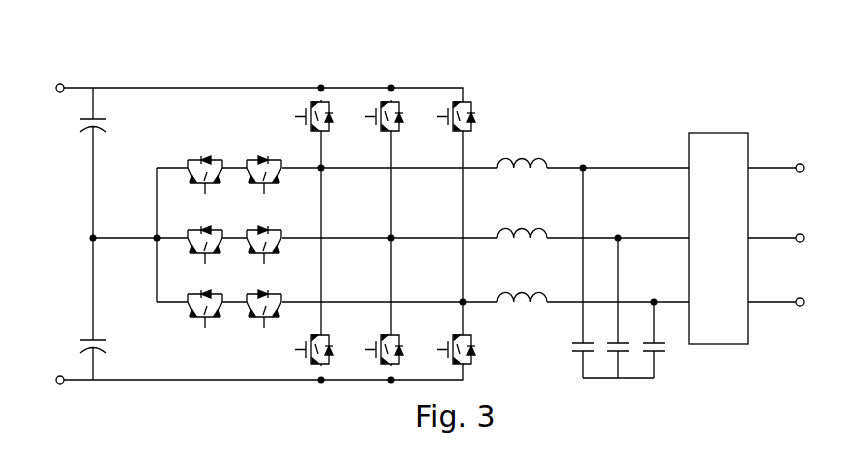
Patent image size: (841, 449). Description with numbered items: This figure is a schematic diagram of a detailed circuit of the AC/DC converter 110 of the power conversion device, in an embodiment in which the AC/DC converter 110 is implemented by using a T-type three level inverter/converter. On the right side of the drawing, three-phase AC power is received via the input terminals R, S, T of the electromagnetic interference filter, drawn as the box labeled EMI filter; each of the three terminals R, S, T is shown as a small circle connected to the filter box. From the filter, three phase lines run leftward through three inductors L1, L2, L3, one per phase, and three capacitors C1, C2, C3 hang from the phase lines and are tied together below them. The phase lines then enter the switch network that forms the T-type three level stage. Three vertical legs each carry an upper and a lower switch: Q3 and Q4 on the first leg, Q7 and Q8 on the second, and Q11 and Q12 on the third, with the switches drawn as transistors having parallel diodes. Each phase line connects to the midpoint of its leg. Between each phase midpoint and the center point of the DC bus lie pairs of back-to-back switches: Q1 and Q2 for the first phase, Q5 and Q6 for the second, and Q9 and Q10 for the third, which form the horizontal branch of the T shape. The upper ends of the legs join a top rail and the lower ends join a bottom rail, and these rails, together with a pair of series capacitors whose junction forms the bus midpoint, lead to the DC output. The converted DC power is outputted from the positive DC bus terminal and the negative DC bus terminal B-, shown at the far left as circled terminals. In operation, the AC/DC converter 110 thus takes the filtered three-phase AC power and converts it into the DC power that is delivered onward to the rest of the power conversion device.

The AC/DC converter 110 is at (72, 57).
The negative DC bus terminal B- is at (74, 309).
The bidirectional switch Q1 is at (198, 162).
The bidirectional switch Q2 is at (256, 162).
The upper IGBT switch Q3 is at (307, 134).
The lower IGBT switch Q4 is at (323, 267).
The bidirectional switch Q5 is at (198, 232).
The bidirectional switch Q6 is at (256, 232).
The upper IGBT switch Q7 is at (377, 169).
The lower IGBT switch Q8 is at (393, 302).
The bidirectional switch Q9 is at (198, 296).
The bidirectional switch Q10 is at (256, 296).
The upper IGBT switch Q11 is at (448, 201).
The lower IGBT switch Q12 is at (469, 334).
The filter inductor L1 is at (522, 150).
The filter inductor L2 is at (522, 220).
The filter inductor L3 is at (522, 284).
The filter capacitor C1 is at (577, 273).
The filter capacitor C2 is at (612, 308).
The filter capacitor C3 is at (647, 340).
The electromagnetic interference filter EMI is at (718, 238).
The input terminal R is at (788, 169).
The input terminal S is at (787, 239).
The input terminal T is at (787, 303).